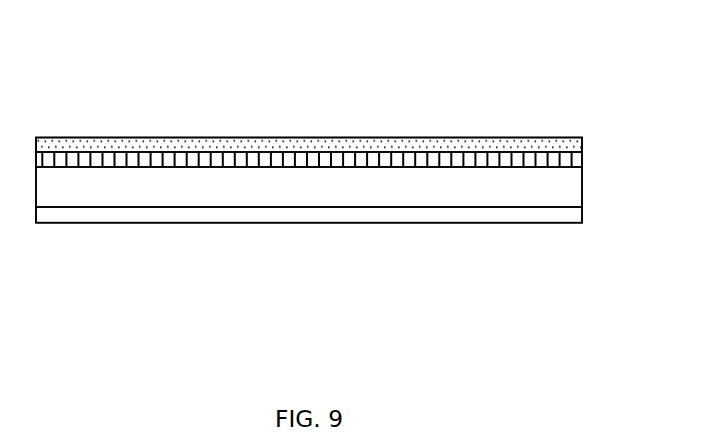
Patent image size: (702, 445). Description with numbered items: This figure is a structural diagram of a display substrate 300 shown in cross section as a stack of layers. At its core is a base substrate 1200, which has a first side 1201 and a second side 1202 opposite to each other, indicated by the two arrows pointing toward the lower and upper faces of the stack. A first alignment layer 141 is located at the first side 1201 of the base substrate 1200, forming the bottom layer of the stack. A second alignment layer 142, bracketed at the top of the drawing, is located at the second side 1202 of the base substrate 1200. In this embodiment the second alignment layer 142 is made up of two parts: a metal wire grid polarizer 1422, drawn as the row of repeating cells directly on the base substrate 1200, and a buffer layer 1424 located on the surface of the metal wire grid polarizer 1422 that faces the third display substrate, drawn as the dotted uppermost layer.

The display substrate 300 is at (309, 181).
The second alignment layer 142 is at (309, 106).
The metal wire grid polarizer 1422 is at (413, 95).
The buffer layer 1424 is at (317, 138).
The base substrate 1200 is at (309, 195).
The first alignment layer 141 is at (155, 215).
The second side 1202 is at (483, 122).
The first side 1201 is at (483, 237).